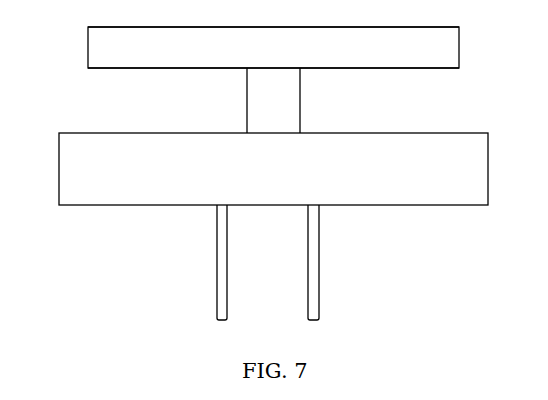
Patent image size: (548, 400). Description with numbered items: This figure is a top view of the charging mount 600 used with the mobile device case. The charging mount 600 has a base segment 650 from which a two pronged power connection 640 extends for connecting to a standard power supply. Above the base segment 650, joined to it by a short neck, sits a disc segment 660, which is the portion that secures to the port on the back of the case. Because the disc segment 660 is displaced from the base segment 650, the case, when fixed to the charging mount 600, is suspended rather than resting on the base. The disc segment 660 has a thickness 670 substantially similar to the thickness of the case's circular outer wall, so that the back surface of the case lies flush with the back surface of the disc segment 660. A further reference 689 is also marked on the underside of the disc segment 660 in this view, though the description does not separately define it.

The charging mount 600 is at (73, 46).
The thickness 670 is at (302, 47).
The bottom surface of top plate 689 is at (119, 73).
The disc segment 660 is at (406, 52).
The base segment 650 is at (389, 190).
The two pronged power connection 640 is at (308, 262).